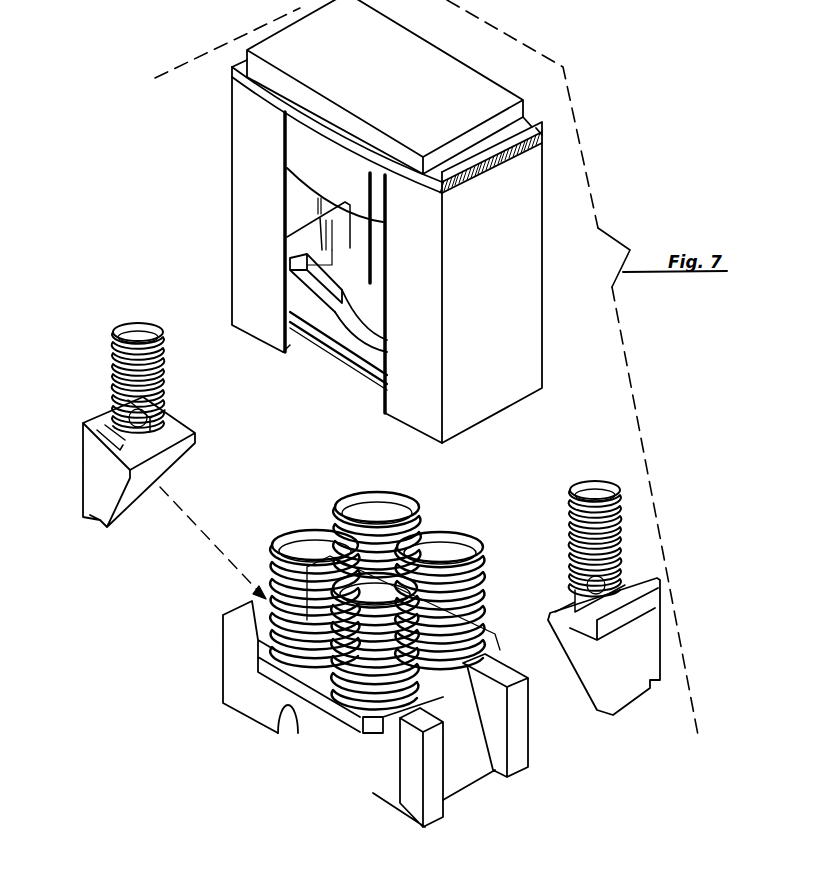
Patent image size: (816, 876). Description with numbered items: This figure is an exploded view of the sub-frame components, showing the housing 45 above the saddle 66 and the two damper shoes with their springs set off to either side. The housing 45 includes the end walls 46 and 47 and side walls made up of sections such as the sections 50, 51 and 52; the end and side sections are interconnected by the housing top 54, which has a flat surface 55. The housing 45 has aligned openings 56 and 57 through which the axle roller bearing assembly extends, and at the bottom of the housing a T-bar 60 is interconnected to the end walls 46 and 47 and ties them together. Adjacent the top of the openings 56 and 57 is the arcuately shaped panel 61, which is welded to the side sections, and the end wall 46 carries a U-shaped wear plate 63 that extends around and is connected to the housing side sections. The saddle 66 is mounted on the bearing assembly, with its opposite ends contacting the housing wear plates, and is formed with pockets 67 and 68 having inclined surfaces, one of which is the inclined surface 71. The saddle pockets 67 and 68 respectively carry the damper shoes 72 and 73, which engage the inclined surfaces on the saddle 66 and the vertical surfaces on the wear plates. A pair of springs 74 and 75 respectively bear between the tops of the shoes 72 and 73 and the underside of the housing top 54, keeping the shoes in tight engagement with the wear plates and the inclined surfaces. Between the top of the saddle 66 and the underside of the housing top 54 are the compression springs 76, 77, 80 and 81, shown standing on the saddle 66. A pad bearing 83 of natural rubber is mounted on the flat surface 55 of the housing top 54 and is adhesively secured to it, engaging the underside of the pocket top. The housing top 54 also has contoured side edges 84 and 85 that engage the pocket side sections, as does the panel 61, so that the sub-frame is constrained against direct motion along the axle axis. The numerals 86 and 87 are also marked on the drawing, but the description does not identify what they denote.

The housing 45 is at (502, 282).
The end wall 46 is at (303, 233).
The end wall 47 is at (510, 360).
The side wall section 50 is at (255, 305).
The side wall section 51 is at (405, 403).
The side wall section 52 is at (352, 250).
The housing top 54 is at (530, 143).
The flat surface 55 is at (523, 127).
The opening 56 is at (292, 348).
The opening 57 is at (377, 283).
The T-bar 60 is at (370, 363).
The arcuately shaped panel 61 is at (307, 150).
The U-shaped wear plate 63 is at (302, 195).
The saddle 66 is at (240, 677).
The pocket 67 is at (262, 600).
The pocket 68 is at (368, 722).
The inclined surface 71 is at (462, 773).
The damper shoe 72 is at (100, 470).
The damper shoe 73 is at (622, 688).
The spring 74 is at (115, 347).
The spring 75 is at (573, 490).
The compression spring 76 is at (356, 497).
The compression spring 77 is at (447, 535).
The compression spring 80 is at (290, 540).
The compression spring 81 is at (357, 676).
The pad bearing 83 is at (408, 60).
The contoured side edge 84 is at (257, 90).
The contoured side edge 85 is at (527, 118).
The cap corner 86 is at (240, 58).
The serrated strip 87 is at (487, 170).